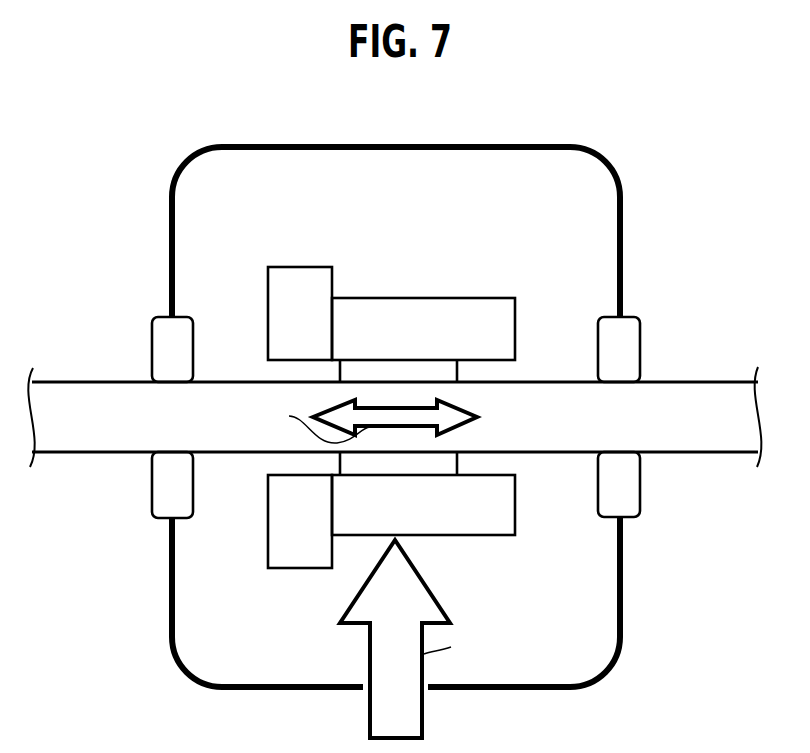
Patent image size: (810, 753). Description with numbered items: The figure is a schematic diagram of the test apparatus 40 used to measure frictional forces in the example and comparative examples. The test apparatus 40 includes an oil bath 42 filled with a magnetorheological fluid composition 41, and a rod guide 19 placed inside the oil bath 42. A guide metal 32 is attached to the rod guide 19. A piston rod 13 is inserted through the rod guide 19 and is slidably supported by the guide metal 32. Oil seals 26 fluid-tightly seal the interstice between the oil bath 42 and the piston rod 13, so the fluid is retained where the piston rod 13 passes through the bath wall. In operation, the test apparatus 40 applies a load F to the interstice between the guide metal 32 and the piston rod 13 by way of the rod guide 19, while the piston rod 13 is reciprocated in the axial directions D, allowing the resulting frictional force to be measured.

The test apparatus 40 is at (498, 122).
The oil bath 42 is at (607, 158).
The magnetorheological fluid composition 41 is at (459, 231).
The oil seals 26 is at (160, 343).
The piston rod 13 is at (80, 433).
The rod guide 19 is at (467, 318).
The guide metal 32 is at (395, 370).